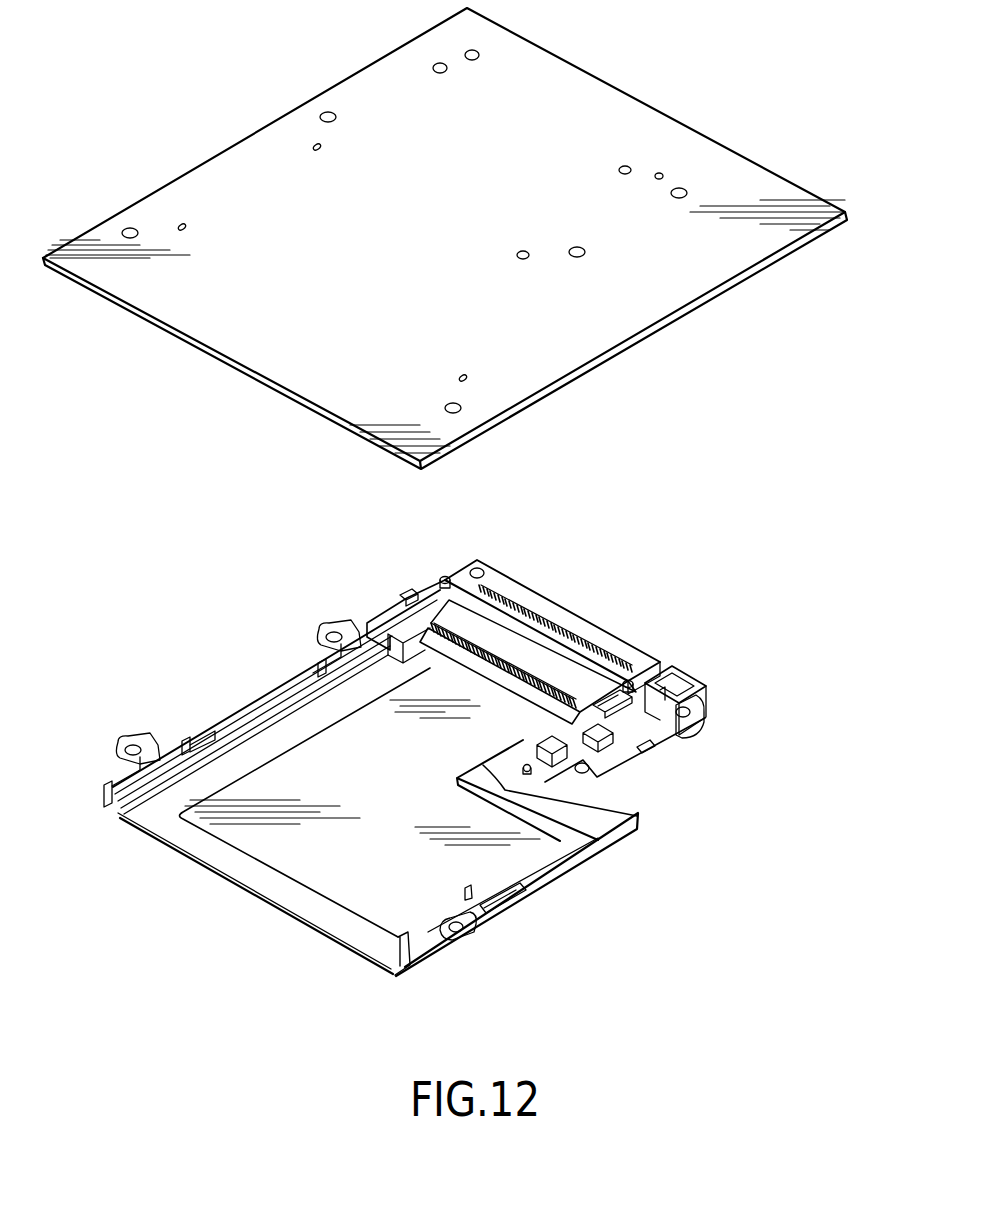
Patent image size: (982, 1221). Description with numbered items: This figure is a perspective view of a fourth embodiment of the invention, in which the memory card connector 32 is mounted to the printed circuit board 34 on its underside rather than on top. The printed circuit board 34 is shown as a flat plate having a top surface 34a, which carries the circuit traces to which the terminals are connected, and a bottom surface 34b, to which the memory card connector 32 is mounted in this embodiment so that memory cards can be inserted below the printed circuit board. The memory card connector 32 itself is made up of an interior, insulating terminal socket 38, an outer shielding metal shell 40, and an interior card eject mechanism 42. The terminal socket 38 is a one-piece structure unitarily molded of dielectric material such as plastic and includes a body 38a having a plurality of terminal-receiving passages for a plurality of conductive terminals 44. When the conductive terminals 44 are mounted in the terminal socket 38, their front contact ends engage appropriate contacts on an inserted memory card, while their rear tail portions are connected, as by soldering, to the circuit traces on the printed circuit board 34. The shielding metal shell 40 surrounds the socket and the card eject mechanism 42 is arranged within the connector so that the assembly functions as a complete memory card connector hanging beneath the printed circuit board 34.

The memory card connector 32 is at (521, 915).
The printed circuit board 34 is at (445, 238).
The top surface 34a is at (461, 217).
The bottom surface 34b is at (240, 376).
The terminal socket 38 is at (478, 619).
The body 38a is at (496, 643).
The shielding metal shell 40 is at (170, 866).
The card eject mechanism 42 is at (613, 740).
The conductive terminals 44 is at (588, 640).